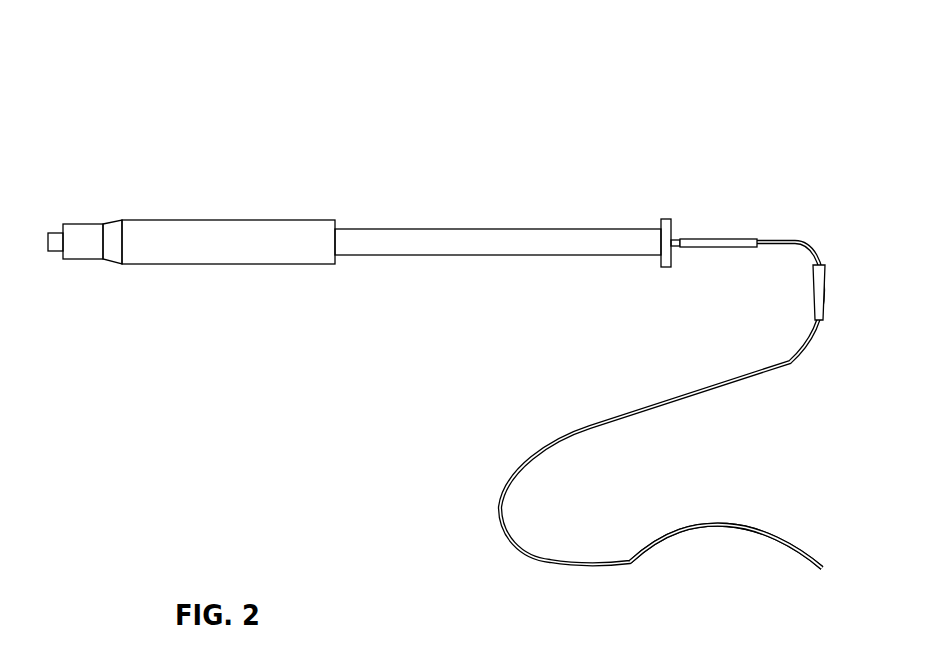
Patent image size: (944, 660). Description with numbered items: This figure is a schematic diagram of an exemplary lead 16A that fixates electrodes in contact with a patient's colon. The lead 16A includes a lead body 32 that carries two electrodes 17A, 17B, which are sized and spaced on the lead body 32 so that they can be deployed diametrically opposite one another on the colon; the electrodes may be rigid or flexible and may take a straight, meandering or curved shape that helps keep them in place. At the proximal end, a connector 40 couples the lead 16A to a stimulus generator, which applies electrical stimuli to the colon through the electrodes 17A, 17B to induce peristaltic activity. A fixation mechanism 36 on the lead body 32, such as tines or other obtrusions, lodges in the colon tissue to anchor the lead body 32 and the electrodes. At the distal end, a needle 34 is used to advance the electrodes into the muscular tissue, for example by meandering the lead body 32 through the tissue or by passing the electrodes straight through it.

The lead 16A is at (489, 105).
The connector 40 is at (184, 231).
The fixation mechanism 36 is at (669, 219).
The electrode 17A is at (720, 240).
The electrode 17B is at (817, 290).
The lead body 32 is at (792, 362).
The needle 34 is at (727, 524).